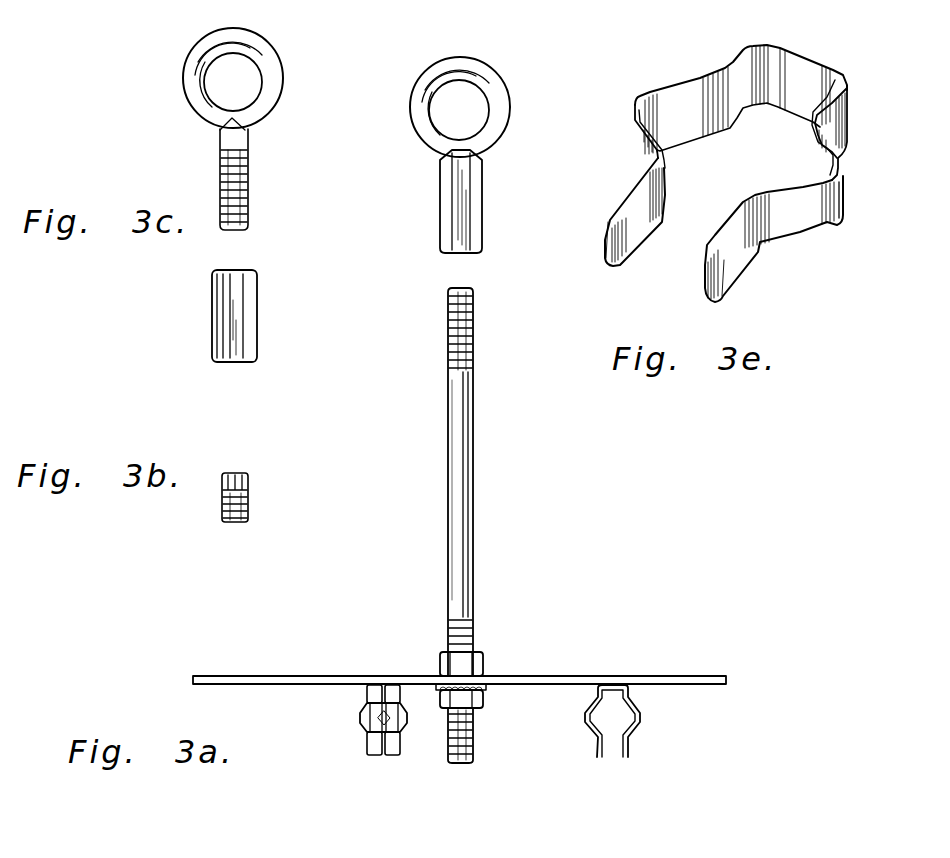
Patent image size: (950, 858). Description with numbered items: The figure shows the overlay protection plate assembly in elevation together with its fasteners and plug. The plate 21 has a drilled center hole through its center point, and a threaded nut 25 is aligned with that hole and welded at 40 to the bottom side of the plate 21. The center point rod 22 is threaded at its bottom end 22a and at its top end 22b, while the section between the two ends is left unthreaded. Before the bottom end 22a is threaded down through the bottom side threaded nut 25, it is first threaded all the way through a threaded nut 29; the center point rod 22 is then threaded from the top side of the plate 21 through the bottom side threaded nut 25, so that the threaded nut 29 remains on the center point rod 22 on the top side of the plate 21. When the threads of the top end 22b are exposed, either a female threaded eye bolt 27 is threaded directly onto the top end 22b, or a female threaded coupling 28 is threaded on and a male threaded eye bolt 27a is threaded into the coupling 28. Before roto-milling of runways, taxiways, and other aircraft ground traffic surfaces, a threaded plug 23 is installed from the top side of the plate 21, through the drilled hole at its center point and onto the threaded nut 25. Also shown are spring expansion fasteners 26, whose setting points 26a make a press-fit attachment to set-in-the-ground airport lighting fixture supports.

In FIG. 3A, the plate 21 is at (733, 684).
In FIG. 3A, the center point rod 22 is at (480, 470).
In FIG. 3A, the bottom end 22a is at (477, 742).
In FIG. 3A, the top end 22b is at (477, 308).
In FIG. 3B, the threaded plug 23 is at (248, 487).
In FIG. 3A, the threaded nut 25 is at (480, 712).
In FIG. 3E, the spring expansion fastener 26 is at (848, 135).
In FIG. 3A, the spring expansion fastener 26 is at (362, 728).
In FIG. 3E, the setting points 26a is at (610, 203).
In FIG. 3A, the female threaded eye bolt 27 is at (513, 92).
In FIG. 3C, the male threaded eye bolt 27a is at (282, 55).
In FIG. 3C, the female threaded coupling 28 is at (258, 302).
In FIG. 3A, the threaded nut 29 is at (487, 660).
In FIG. 3A, the weld 40 is at (483, 688).